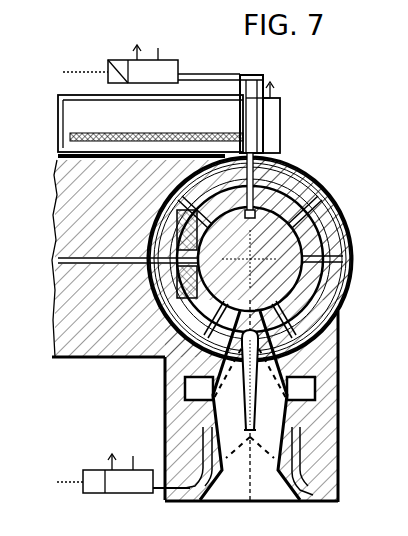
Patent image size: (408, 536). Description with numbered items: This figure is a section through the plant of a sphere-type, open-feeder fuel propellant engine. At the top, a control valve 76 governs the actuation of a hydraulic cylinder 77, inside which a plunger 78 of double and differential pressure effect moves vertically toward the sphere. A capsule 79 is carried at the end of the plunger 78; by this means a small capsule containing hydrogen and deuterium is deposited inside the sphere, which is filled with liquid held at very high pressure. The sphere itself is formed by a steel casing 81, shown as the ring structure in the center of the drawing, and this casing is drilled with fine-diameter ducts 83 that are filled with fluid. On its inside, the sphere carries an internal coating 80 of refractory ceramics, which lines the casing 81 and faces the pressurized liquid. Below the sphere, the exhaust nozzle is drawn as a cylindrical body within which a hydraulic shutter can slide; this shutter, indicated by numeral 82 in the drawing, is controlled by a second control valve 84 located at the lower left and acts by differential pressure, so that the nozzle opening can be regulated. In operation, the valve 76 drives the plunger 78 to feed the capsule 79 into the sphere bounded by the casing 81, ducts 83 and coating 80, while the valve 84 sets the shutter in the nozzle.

The control valve 76 is at (120, 64).
The hydraulic cylinder 77 is at (260, 117).
The plunger 78 is at (268, 168).
The capsule 79 is at (255, 217).
The internal coating 80 is at (310, 247).
The steel casing 81 is at (322, 222).
The needle 82 is at (258, 412).
The ducts 83 is at (327, 262).
The control valve 84 is at (123, 474).